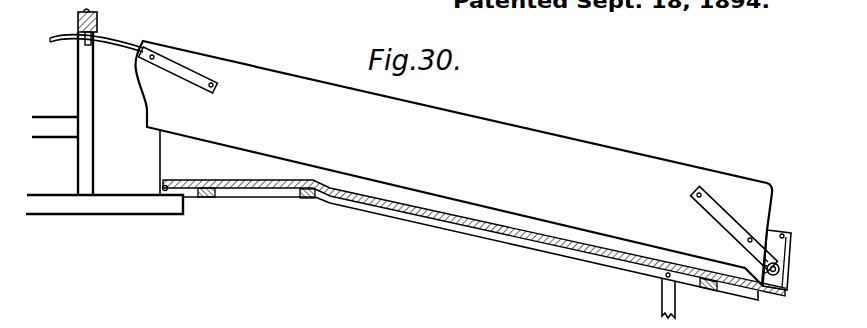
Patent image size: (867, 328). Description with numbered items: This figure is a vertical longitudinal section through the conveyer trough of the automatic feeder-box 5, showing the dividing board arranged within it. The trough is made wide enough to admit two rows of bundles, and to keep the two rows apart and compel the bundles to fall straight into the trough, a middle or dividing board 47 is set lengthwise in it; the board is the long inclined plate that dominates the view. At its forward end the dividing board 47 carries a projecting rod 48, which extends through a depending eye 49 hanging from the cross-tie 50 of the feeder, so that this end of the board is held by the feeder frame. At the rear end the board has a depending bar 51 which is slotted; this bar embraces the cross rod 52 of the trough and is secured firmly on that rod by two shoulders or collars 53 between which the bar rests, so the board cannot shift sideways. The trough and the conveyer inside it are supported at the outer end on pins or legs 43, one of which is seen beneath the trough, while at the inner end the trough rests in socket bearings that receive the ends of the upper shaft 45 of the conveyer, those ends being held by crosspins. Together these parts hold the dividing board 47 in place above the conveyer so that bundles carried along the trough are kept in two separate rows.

The pins or legs 43 is at (661, 305).
The upper shaft of the conveyer 45 is at (162, 188).
The middle or dividing board 47 is at (453, 163).
The projecting rod 48 is at (110, 37).
The depending eye 49 is at (83, 45).
The cross-tie 50 is at (80, 15).
The depending bar 51 is at (733, 230).
The cross rod 52 is at (781, 288).
The shoulders or collars 53 is at (781, 271).
The automatic feeder-box 5 is at (213, 151).